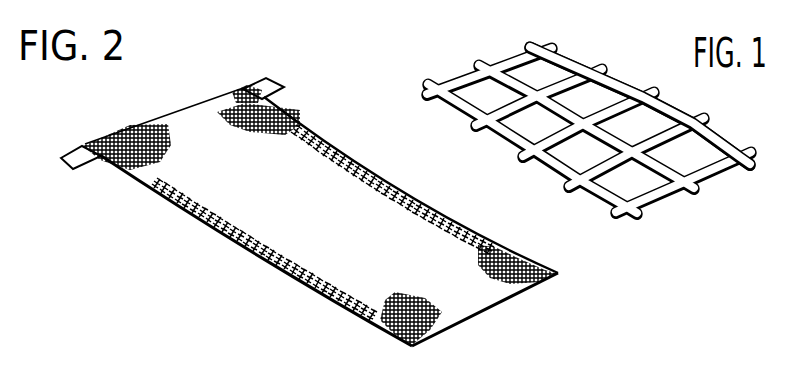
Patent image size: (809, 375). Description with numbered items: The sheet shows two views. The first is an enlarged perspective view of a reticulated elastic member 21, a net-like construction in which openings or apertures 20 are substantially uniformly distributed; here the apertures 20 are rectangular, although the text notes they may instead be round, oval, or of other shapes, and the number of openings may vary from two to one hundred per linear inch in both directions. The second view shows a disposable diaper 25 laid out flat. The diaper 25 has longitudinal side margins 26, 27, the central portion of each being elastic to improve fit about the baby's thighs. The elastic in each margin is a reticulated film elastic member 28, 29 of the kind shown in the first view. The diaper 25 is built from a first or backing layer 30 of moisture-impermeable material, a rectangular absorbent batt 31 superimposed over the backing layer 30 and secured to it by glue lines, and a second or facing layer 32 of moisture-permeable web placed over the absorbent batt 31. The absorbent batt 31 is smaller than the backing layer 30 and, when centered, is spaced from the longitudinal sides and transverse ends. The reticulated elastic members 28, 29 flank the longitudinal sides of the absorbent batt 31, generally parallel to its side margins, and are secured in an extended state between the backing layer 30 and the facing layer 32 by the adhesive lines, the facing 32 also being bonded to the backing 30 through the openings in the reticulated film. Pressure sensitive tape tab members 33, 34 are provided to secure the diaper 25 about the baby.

In FIG. 1, the openings or apertures 20 is at (593, 105).
In FIG. 1, the reticulated elastic member 21 is at (687, 97).
In FIG. 2, the disposable diaper 25 is at (188, 243).
In FIG. 2, the longitudinal side margin 26 is at (243, 255).
In FIG. 2, the longitudinal side margin 27 is at (385, 178).
In FIG. 2, the reticulated elastic member 28 is at (307, 290).
In FIG. 2, the reticulated elastic member 29 is at (433, 205).
In FIG. 2, the backing layer 30 is at (498, 302).
In FIG. 2, the absorbent batt 31 is at (280, 147).
In FIG. 2, the facing layer 32 is at (108, 131).
In FIG. 2, the tape tab member 33 is at (70, 166).
In FIG. 2, the tape tab member 34 is at (268, 80).